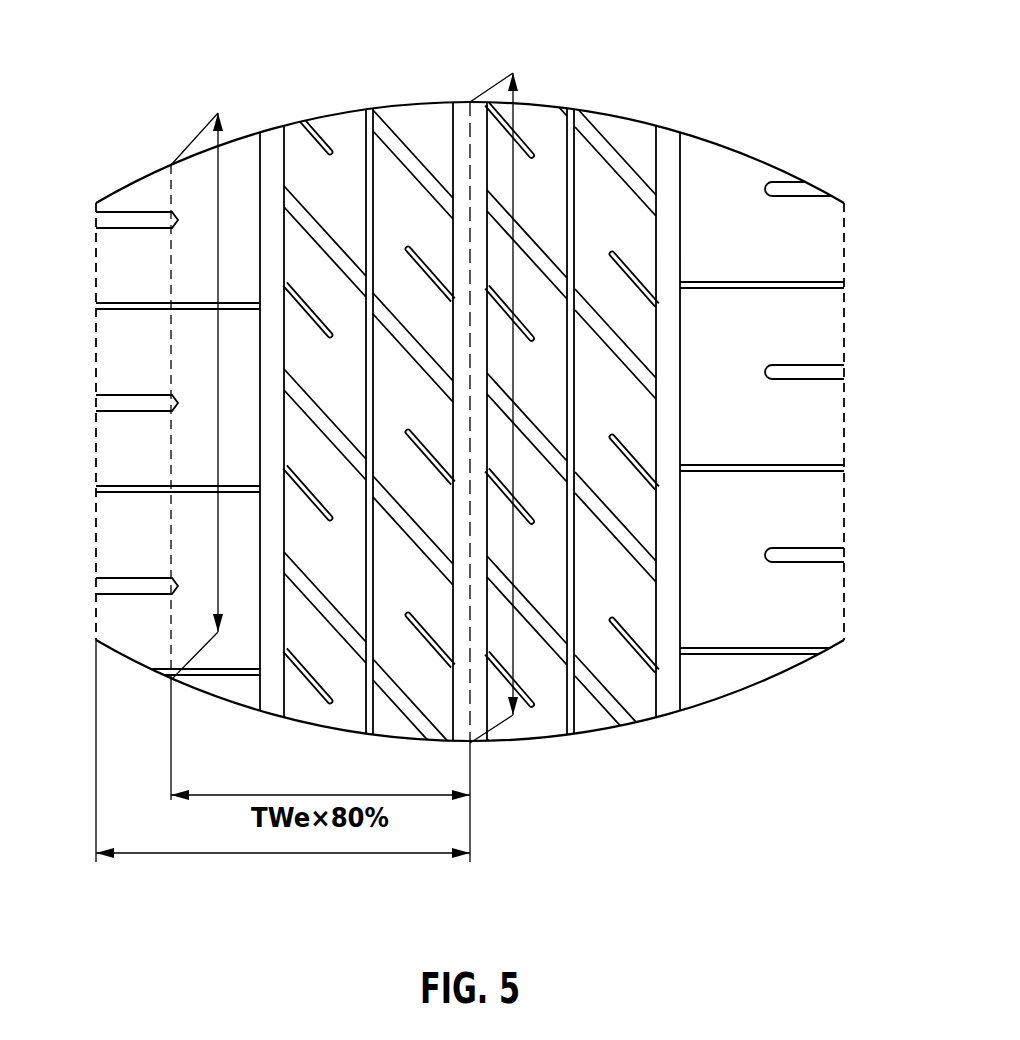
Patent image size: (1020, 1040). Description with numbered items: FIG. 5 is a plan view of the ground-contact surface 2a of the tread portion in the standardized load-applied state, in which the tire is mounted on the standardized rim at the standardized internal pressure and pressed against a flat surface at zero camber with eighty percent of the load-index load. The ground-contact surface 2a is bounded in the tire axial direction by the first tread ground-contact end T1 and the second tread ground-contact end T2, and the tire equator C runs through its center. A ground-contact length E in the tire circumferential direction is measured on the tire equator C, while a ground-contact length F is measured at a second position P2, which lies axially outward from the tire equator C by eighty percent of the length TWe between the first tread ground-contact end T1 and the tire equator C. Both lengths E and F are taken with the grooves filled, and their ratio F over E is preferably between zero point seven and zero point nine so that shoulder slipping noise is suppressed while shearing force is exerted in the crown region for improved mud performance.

The ground-contact surface 2a is at (778, 122).
The first tread ground-contact end T1 is at (96, 235).
The second tread ground-contact end T2 is at (847, 223).
The tire equator C is at (469, 452).
The ground-contact length on the tire equator E is at (505, 408).
The ground-contact length at the second position F is at (206, 396).
The second position P2 is at (171, 727).
The length between the first tread ground-contact end and the tire equator TWe is at (283, 764).